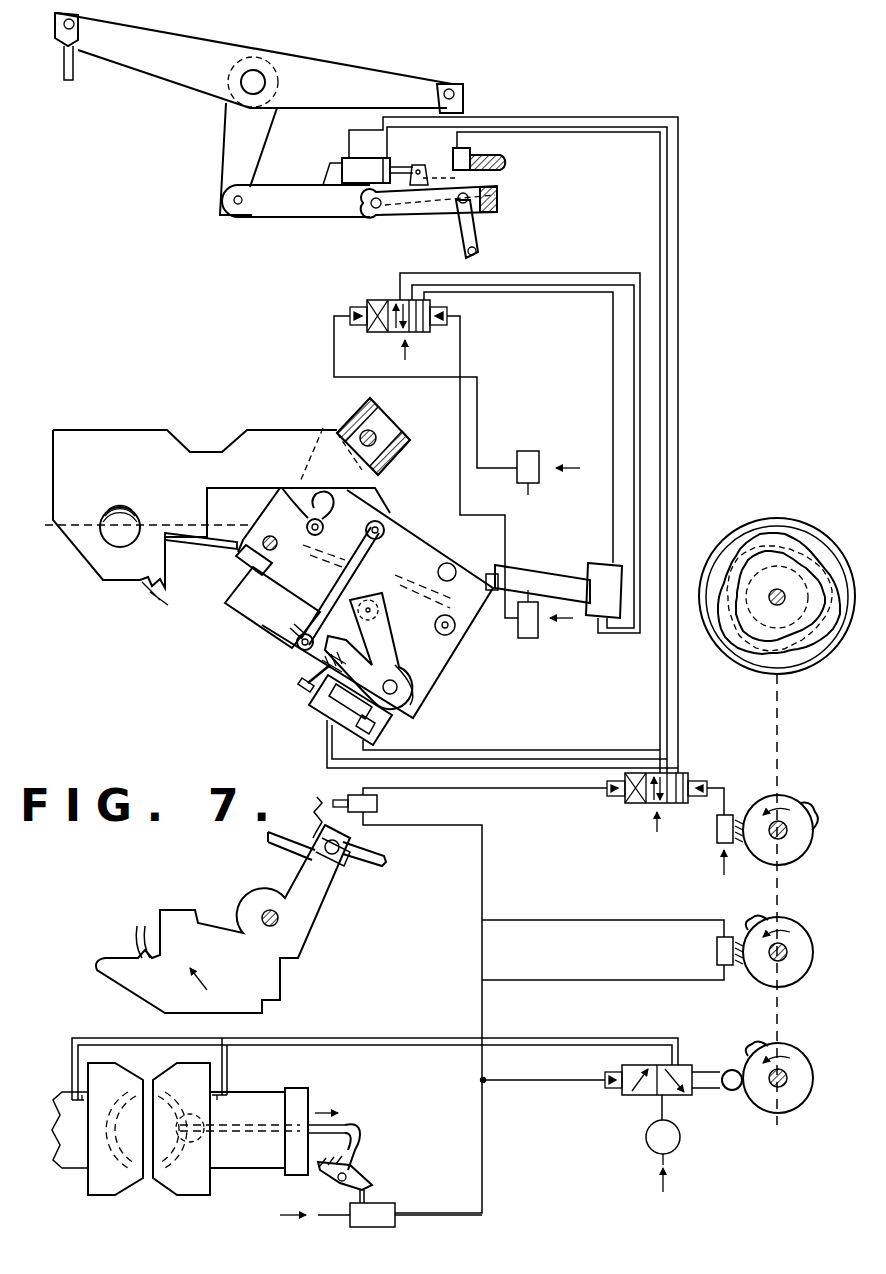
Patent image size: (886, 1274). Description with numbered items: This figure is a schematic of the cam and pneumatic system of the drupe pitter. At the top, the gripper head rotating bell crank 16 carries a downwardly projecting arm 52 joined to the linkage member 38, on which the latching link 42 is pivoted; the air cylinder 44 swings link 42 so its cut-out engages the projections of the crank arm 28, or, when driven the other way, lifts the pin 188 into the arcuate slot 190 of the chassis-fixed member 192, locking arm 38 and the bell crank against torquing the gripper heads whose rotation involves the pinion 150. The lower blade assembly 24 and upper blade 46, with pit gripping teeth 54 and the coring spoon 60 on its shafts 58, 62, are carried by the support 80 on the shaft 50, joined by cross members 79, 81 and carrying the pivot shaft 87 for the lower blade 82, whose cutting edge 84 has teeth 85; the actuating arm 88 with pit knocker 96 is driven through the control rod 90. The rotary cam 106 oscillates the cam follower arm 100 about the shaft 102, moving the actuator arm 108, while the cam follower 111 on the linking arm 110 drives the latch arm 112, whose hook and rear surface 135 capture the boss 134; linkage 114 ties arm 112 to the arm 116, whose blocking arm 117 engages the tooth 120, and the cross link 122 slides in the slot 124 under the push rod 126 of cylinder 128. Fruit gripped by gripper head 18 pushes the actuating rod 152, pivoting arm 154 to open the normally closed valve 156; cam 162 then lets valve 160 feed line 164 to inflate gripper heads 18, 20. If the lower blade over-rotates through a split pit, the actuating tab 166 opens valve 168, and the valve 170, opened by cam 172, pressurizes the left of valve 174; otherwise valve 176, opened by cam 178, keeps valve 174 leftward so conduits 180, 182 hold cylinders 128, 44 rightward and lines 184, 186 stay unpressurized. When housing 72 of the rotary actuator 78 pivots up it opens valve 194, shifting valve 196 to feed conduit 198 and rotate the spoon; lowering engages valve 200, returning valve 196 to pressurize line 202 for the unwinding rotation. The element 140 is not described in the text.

The gripper head rotating bell crank 16 is at (190, 52).
The pinion 150 is at (262, 72).
The downwardly projecting arm 52 is at (228, 153).
The linkage member 38 is at (299, 214).
The latching link 42 is at (420, 214).
The pin 188 is at (497, 184).
The air cylinder 44 is at (350, 158).
The member 192 is at (455, 157).
The arcuate slot 190 is at (480, 161).
The crank arm 28 is at (482, 234).
The valve 196 is at (393, 298).
The line 202 is at (626, 273).
The conduit 198 is at (592, 290).
The valve 194 is at (530, 451).
The valve 200 is at (528, 638).
The housing 72 is at (550, 558).
The rotary actuator 78 is at (598, 563).
The lower blade assembly 24 is at (122, 425).
The cutting and pit gripping blade 46 is at (92, 567).
The pit gripping teeth 54 is at (150, 583).
The coring spoon 60 is at (112, 510).
The shaft portion 62 is at (53, 543).
The shaft 58 is at (210, 550).
The pivot shaft 87 is at (263, 537).
The support 80 is at (330, 425).
The shaft 50 is at (378, 433).
The cross member 79 is at (362, 408).
The cross member 81 is at (405, 451).
The boss 134 is at (310, 512).
The rear surface 135 is at (325, 518).
The latch arm 112 is at (398, 530).
The cam follower 111 is at (455, 633).
The linking arm 110 is at (450, 641).
The linkage 114 is at (341, 600).
The blocking arm 117 is at (236, 611).
The tooth 120 is at (238, 573).
The arm 116 is at (298, 646).
The slot 124 is at (320, 661).
The cross link 122 is at (320, 677).
The cylinder 128 is at (331, 713).
The push rod 126 is at (326, 693).
The cam follower arm 100 is at (402, 661).
The shaft 102 is at (398, 687).
The actuator arm 108 is at (388, 709).
The rotary cam 106 is at (771, 518).
The conduit 182 is at (659, 678).
The line 186 is at (681, 680).
The conduit 180 is at (488, 763).
The line 184 is at (548, 754).
The valve 174 is at (628, 804).
The valve 176 is at (717, 843).
The cam 178 is at (796, 858).
The normally closed valve 170 is at (716, 950).
The cam 172 is at (794, 978).
The cam 162 is at (798, 1112).
The cutting edge 84 is at (100, 962).
The pit gripping teeth 85 is at (140, 934).
The lower blade 82 is at (245, 1010).
The actuating arm 88 is at (335, 899).
The pit knocker 96 is at (270, 848).
The control rod 90 is at (385, 861).
The actuating tab 166 is at (318, 798).
The normally closed valve 168 is at (378, 805).
The line 164 is at (560, 1044).
The fruit body gripper head assembly 20 is at (108, 1202).
The fruit body gripper head assembly 18 is at (178, 1202).
The actuating rod 152 is at (350, 1119).
The latch 140 is at (362, 1140).
The arm 154 is at (366, 1172).
The normally closed air valve 156 is at (356, 1228).
The valve 160 is at (622, 1096).